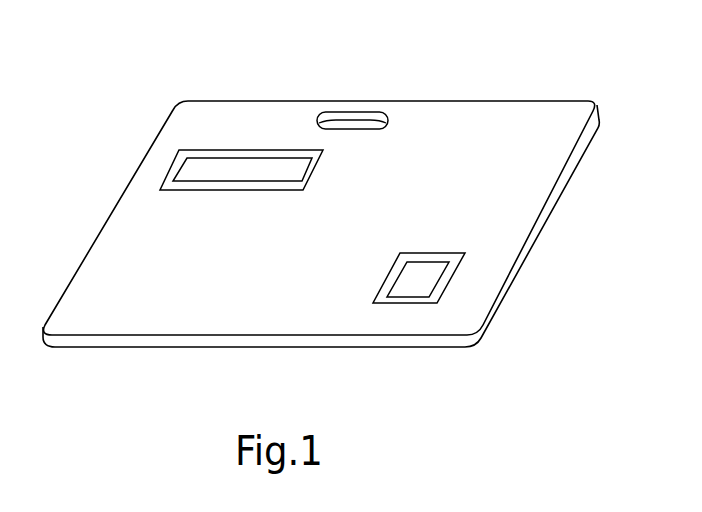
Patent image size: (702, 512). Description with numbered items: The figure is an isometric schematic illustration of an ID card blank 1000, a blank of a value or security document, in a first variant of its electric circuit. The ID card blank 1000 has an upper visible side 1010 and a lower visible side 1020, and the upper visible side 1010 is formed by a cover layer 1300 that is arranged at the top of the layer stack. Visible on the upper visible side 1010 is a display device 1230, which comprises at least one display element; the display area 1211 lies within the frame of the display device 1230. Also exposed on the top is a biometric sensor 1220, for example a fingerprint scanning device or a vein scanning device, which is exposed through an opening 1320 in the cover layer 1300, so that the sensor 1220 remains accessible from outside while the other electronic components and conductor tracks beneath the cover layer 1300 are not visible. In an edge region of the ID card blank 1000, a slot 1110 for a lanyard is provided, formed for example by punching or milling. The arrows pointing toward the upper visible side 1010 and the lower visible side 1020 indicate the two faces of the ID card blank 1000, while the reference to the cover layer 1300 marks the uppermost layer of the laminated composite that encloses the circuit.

The ID card blank 1000 is at (458, 92).
The upper visible side 1010 is at (397, 170).
The lower visible side 1020 is at (298, 265).
The slot 1110 is at (350, 123).
The display window 1211 is at (227, 158).
The biometric sensor 1220 is at (430, 260).
The display device 1230 is at (303, 189).
The cover layer 1300 is at (520, 160).
The opening 1320 is at (414, 305).